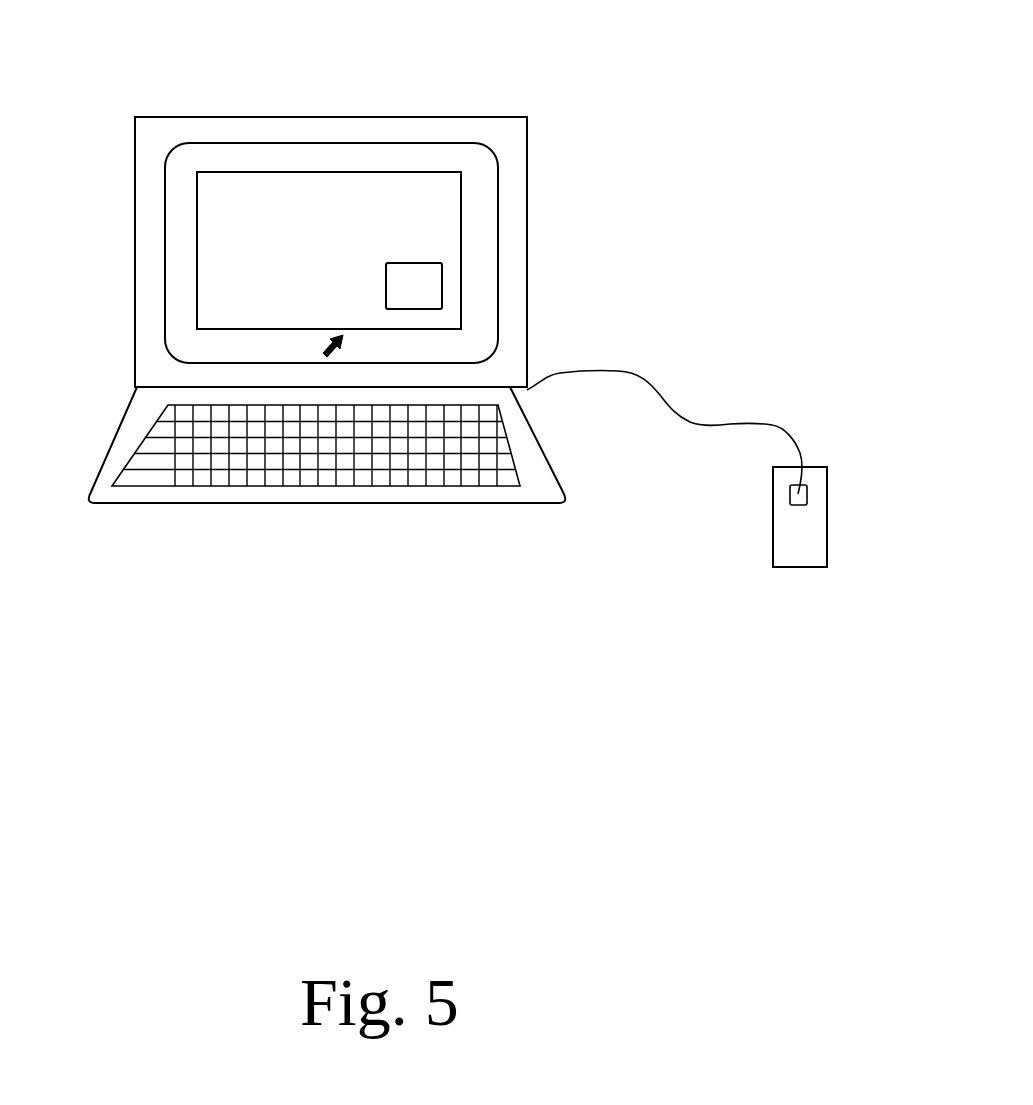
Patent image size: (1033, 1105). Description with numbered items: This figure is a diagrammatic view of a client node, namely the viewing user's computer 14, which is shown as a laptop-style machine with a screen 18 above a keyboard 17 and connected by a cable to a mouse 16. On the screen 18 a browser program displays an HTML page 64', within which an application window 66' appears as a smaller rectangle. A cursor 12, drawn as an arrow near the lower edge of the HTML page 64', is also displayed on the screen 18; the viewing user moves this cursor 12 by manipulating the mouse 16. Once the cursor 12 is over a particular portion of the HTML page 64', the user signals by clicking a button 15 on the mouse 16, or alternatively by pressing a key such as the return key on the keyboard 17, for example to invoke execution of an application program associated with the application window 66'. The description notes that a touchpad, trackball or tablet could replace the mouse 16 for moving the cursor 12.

The cursor 12 is at (340, 347).
The computer 14 is at (135, 280).
The button 15 is at (803, 460).
The mouse 16 is at (827, 530).
The keyboard 17 is at (107, 425).
The screen 18 is at (358, 143).
The HTML page 64' is at (428, 227).
The application window 66' is at (502, 256).